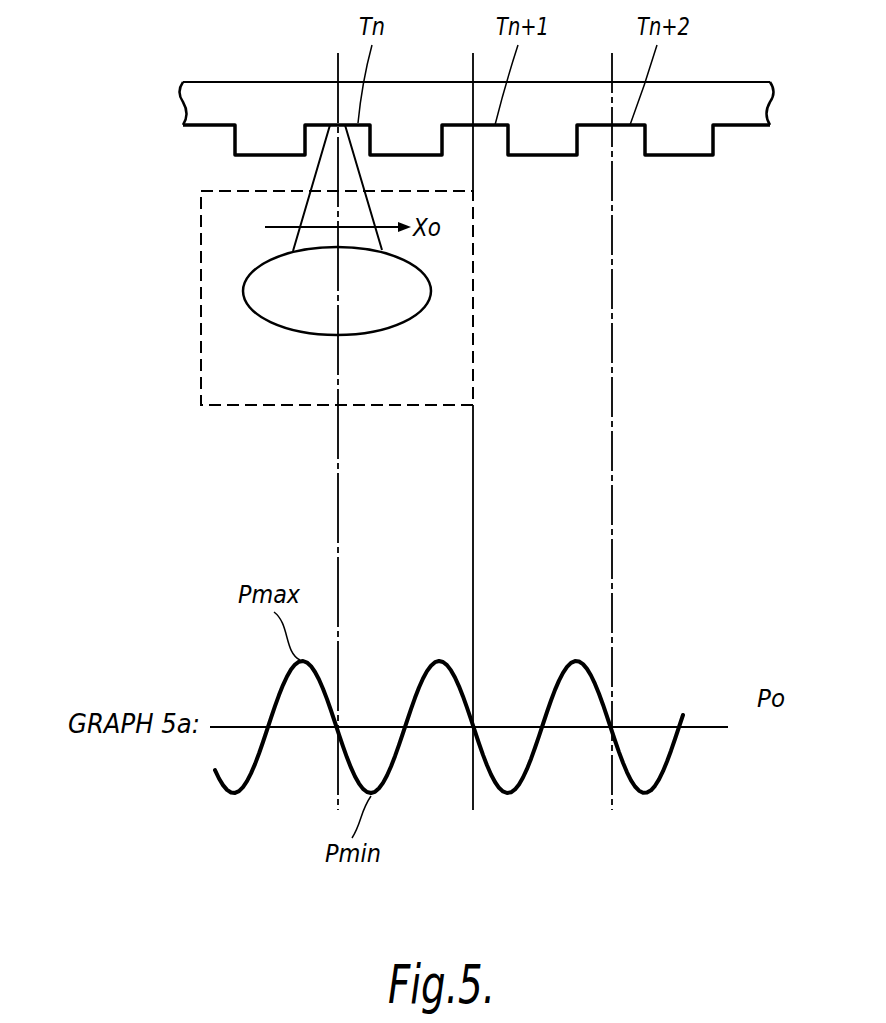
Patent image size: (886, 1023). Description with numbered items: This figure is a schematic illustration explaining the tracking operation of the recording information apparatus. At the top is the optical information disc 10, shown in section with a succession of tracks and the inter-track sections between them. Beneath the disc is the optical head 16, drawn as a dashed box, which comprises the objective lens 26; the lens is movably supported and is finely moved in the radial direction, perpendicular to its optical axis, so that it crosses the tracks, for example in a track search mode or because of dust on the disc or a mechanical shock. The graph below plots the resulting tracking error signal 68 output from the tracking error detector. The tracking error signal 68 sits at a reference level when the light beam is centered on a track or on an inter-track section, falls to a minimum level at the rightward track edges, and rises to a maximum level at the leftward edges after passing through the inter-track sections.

The optical information disc 10 is at (230, 93).
The optical head 16 is at (473, 265).
The objective lens 26 is at (262, 300).
The tracking error signal 68 is at (271, 717).